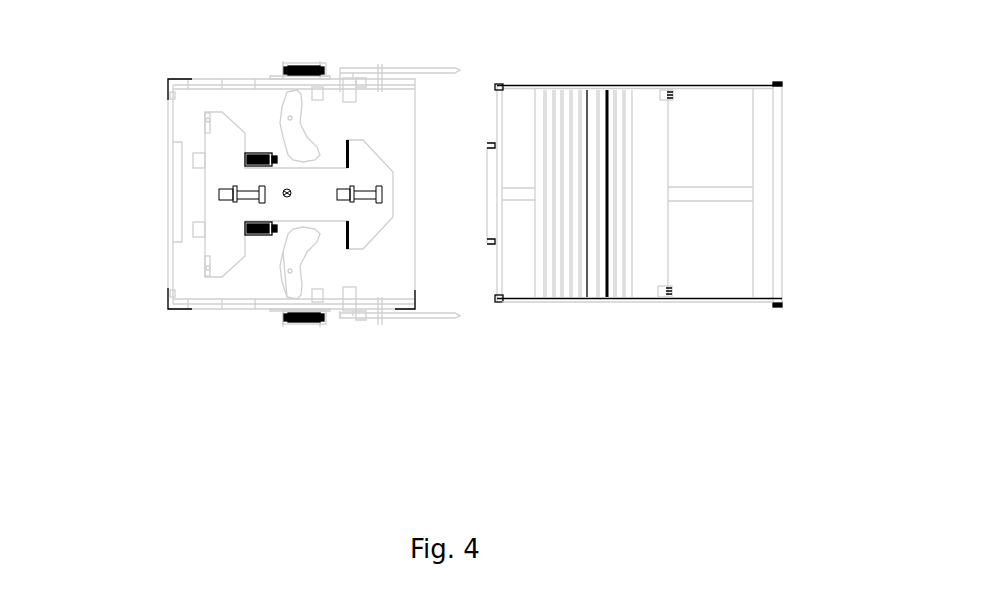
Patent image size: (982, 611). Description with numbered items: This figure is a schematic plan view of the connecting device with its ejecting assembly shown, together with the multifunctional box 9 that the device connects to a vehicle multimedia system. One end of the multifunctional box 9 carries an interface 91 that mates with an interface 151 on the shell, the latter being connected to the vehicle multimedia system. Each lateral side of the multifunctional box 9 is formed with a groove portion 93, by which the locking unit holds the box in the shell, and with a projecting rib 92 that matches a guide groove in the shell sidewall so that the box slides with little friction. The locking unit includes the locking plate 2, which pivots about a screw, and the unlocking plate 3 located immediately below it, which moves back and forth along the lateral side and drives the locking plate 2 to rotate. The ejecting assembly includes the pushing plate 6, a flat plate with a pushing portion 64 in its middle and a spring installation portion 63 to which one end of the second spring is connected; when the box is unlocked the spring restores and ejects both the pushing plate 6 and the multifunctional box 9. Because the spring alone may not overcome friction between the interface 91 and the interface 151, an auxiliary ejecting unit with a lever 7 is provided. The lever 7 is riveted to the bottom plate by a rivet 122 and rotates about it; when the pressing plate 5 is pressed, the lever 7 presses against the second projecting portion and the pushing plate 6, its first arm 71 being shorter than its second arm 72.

The locking plate 2 is at (349, 298).
The unlocking plate 3 is at (362, 312).
The pressing plate 5 is at (432, 318).
The pushing plate 6 is at (222, 160).
The lever 7 is at (291, 252).
The multifunctional box 9 is at (645, 230).
The spring installation portion 63 is at (245, 228).
The pushing portion 64 is at (345, 237).
The first arm 71 is at (318, 274).
The second arm 72 is at (317, 231).
The interface 91 is at (490, 158).
The projecting rib 92 is at (725, 302).
The groove portion 93 is at (660, 292).
The rivet 122 is at (288, 272).
The interface 151 is at (175, 177).